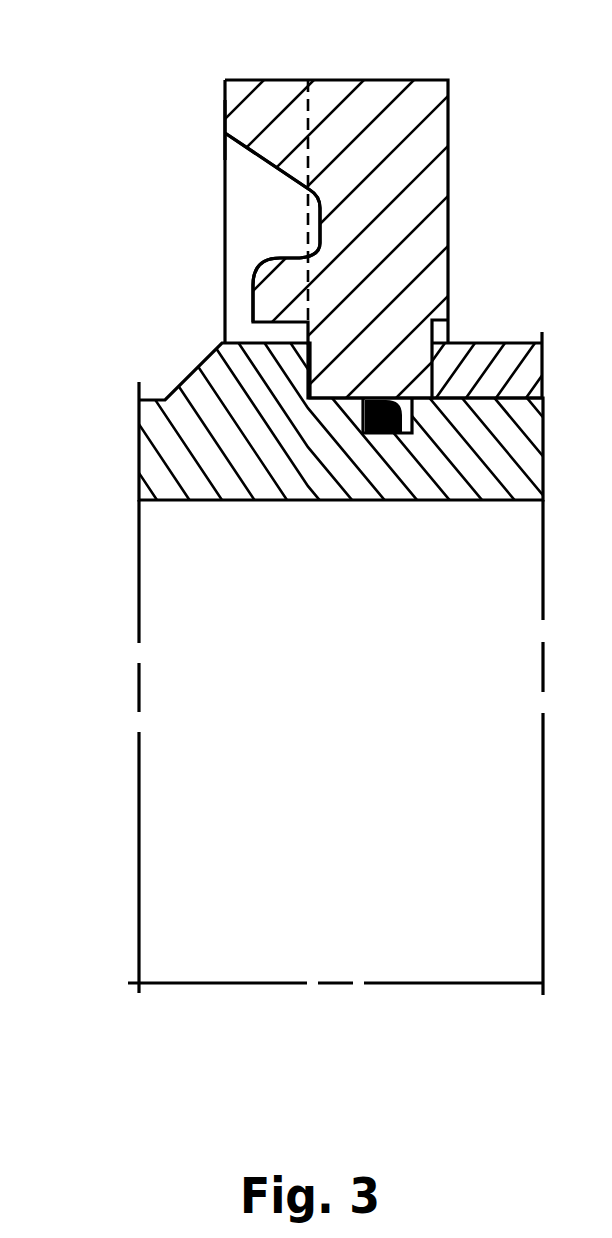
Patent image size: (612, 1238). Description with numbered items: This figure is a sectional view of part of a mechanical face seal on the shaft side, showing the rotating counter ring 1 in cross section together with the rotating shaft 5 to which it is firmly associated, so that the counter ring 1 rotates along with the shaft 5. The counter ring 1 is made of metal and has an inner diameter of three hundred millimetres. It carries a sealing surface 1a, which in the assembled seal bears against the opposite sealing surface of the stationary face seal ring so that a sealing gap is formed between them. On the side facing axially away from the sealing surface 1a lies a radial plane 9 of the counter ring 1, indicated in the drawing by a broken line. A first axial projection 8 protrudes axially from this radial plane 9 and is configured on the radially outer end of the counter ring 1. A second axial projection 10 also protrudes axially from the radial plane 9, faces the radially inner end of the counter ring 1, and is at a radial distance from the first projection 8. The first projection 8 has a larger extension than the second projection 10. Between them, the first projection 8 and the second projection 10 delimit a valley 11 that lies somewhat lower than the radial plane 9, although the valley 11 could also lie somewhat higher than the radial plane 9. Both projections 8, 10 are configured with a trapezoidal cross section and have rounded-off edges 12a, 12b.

The rotating counter ring 1 is at (367, 107).
The sealing surface 1a is at (448, 140).
The rotating shaft 5 is at (195, 388).
The first axial projection 8 is at (246, 121).
The radial plane 9 is at (310, 80).
The second axial projection 10 is at (263, 293).
The valley 11 is at (318, 222).
The rounded-off edge 12a is at (265, 160).
The rounded-off edge 12b is at (280, 258).